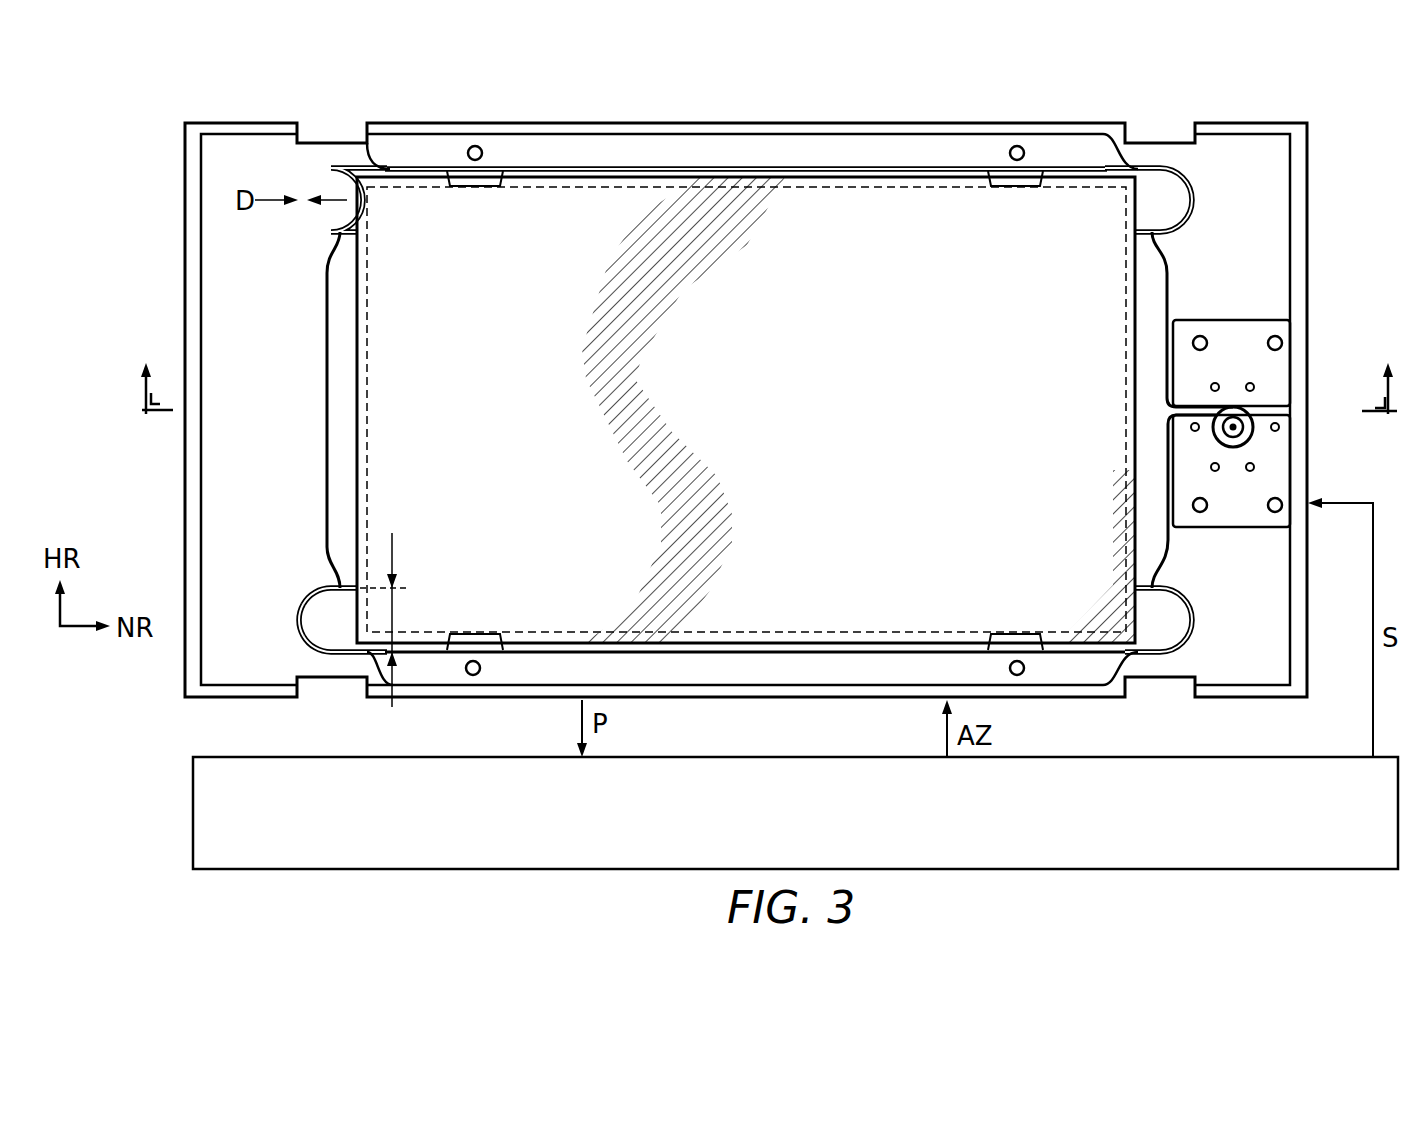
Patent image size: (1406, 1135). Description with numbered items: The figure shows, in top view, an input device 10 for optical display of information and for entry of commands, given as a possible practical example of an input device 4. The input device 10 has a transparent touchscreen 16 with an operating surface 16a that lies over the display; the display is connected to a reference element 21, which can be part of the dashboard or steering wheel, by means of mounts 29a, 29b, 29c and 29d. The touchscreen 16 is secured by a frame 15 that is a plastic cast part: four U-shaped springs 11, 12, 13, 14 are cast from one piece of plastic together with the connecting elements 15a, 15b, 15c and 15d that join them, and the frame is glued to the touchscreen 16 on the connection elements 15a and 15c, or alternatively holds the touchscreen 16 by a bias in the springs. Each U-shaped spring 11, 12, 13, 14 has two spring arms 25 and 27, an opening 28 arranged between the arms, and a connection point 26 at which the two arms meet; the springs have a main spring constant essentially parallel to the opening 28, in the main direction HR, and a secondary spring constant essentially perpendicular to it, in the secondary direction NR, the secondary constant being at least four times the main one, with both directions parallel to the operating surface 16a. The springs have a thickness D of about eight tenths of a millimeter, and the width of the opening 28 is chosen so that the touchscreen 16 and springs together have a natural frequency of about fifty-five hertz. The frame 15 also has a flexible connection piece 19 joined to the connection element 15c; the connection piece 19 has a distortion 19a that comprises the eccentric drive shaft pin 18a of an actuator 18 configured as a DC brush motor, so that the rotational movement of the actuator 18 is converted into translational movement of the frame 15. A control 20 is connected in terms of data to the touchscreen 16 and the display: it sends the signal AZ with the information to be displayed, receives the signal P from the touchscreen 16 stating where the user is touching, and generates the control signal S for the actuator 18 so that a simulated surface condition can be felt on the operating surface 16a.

The input device 10 is at (674, 410).
The U-shaped spring 11 is at (1193, 200).
The U-shaped spring 12 is at (302, 186).
The U-shaped spring 13 is at (309, 604).
The U-shaped spring 14 is at (1192, 625).
The frame 15 is at (746, 409).
The connection element 15a is at (337, 373).
The connection element 15b is at (747, 147).
The connection element 15c is at (1160, 285).
The connection element 15d is at (705, 680).
The touchscreen 16 is at (746, 364).
The operating surface 16a is at (777, 386).
The actuator 18 is at (1272, 453).
The eccentric drive shaft pin 18a is at (1253, 436).
The connection piece 19 is at (1282, 365).
The distortion 19a is at (1253, 418).
The control 20 is at (810, 832).
The reference element 21 is at (280, 297).
The spring arm 25 is at (305, 598).
The connection point 26 is at (303, 612).
The spring arm 27 is at (300, 638).
The opening 28 is at (397, 553).
The mount 29a is at (465, 190).
The mount 29b is at (1005, 190).
The mount 29c is at (1005, 630).
The mount 29d is at (487, 630).
The input device 4 is at (769, 372).